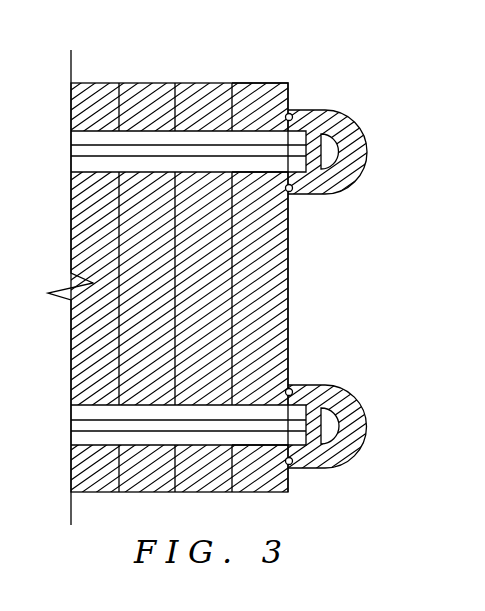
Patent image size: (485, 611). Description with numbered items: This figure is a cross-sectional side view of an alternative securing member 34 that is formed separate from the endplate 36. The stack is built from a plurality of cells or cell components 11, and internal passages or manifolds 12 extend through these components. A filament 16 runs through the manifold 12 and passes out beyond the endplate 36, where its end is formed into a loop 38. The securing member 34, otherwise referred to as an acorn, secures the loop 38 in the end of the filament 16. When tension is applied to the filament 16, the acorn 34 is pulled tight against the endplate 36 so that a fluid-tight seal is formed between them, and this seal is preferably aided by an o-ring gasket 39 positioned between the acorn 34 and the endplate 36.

The cell components 11 is at (106, 84).
The manifold 12 is at (246, 130).
The filament 16 is at (107, 160).
The securing member 34 is at (343, 112).
The endplate 36 is at (291, 309).
The loop 38 is at (330, 148).
The o-ring gasket 39 is at (298, 111).